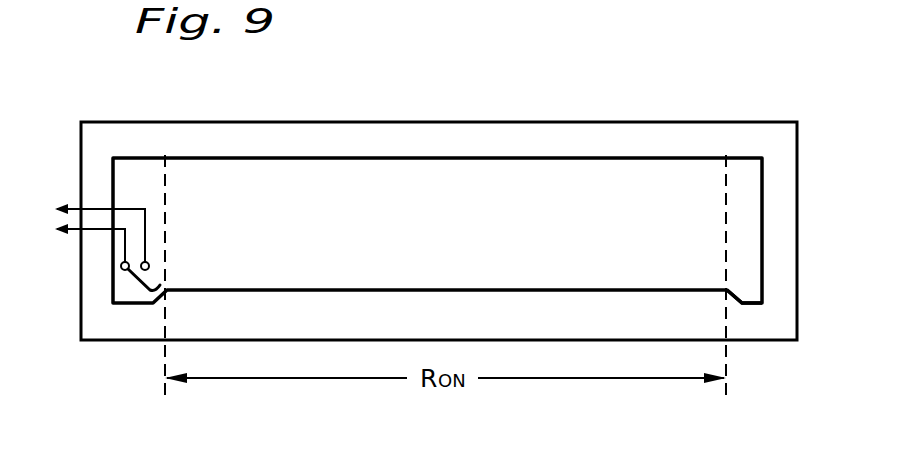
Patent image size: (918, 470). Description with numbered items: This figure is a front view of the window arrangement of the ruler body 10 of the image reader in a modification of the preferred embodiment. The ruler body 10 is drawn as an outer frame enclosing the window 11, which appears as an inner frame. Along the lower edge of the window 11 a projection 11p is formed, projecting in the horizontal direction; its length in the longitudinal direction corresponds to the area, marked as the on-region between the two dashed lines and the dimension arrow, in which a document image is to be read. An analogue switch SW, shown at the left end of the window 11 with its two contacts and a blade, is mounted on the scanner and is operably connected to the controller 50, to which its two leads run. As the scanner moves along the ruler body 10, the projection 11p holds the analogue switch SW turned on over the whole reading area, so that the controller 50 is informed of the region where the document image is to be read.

The ruler body 10 is at (701, 122).
The window 11 is at (555, 160).
The projection 11p is at (687, 295).
The analogue switch SW is at (133, 274).
The controller 50 is at (86, 227).